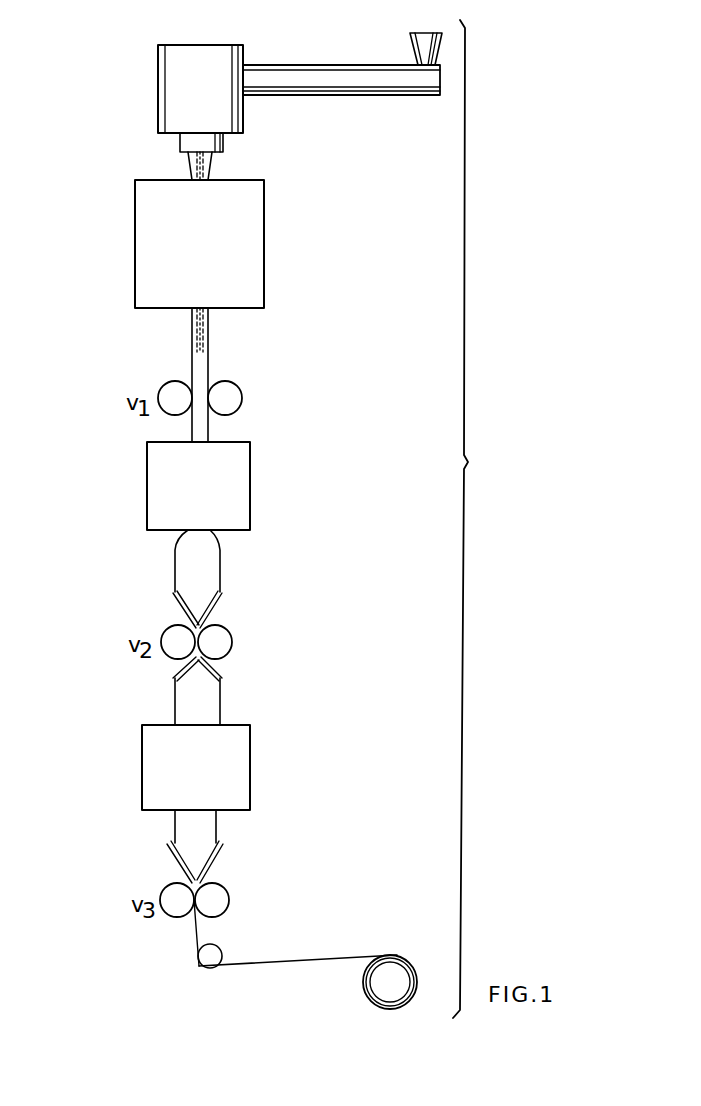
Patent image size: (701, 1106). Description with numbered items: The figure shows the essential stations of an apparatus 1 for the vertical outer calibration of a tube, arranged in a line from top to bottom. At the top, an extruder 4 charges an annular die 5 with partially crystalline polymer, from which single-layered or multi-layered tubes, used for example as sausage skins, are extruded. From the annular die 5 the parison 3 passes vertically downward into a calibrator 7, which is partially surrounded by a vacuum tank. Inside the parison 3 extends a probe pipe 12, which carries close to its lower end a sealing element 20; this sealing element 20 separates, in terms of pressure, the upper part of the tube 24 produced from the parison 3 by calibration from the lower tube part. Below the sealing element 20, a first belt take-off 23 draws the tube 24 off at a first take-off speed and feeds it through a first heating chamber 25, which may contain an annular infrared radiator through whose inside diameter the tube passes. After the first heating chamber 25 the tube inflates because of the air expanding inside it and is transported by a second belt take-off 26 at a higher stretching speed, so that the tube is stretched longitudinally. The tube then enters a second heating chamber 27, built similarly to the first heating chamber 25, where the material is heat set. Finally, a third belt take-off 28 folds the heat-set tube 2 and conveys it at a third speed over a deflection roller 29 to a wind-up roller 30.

The apparatus 1 is at (469, 519).
The heat-set tube 2 is at (302, 960).
The parison 3 is at (218, 165).
The extruder 4 is at (343, 80).
The annular die 5 is at (170, 77).
The calibrator 7 is at (148, 243).
The probe pipe 12 is at (192, 160).
The sealing element 20 is at (192, 343).
The first belt take-off 23 is at (232, 390).
The tube 24 is at (213, 322).
The first heating chamber 25 is at (158, 493).
The second belt take-off 26 is at (222, 633).
The second heating chamber 27 is at (148, 758).
The third belt take-off 28 is at (222, 893).
The deflection roller 29 is at (207, 964).
The wind-up roller 30 is at (376, 988).